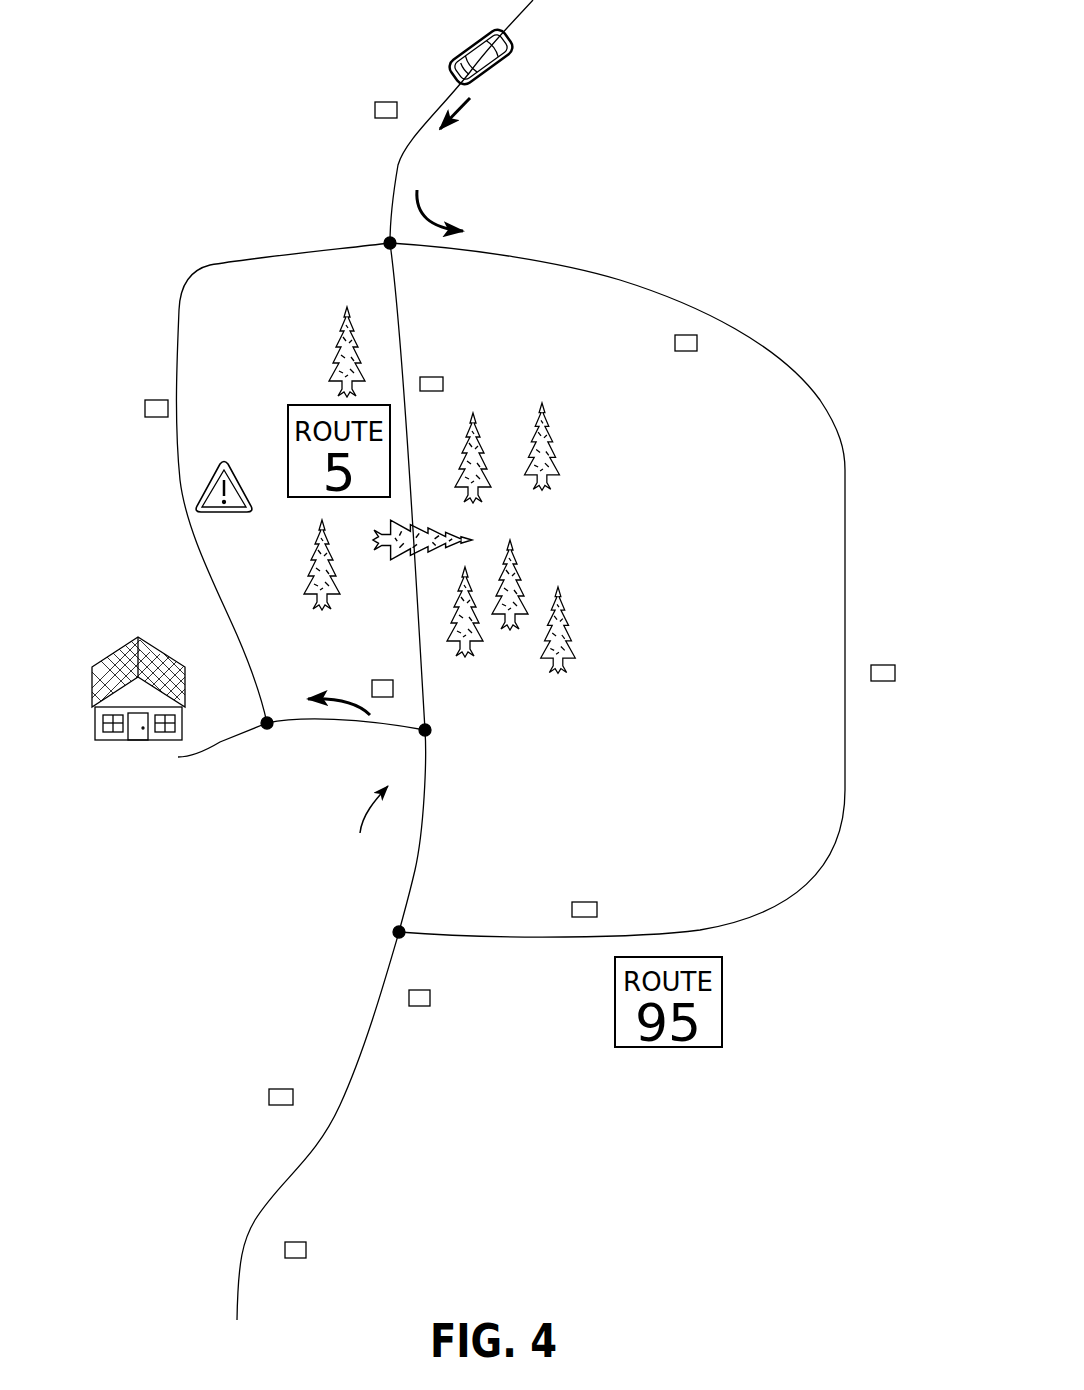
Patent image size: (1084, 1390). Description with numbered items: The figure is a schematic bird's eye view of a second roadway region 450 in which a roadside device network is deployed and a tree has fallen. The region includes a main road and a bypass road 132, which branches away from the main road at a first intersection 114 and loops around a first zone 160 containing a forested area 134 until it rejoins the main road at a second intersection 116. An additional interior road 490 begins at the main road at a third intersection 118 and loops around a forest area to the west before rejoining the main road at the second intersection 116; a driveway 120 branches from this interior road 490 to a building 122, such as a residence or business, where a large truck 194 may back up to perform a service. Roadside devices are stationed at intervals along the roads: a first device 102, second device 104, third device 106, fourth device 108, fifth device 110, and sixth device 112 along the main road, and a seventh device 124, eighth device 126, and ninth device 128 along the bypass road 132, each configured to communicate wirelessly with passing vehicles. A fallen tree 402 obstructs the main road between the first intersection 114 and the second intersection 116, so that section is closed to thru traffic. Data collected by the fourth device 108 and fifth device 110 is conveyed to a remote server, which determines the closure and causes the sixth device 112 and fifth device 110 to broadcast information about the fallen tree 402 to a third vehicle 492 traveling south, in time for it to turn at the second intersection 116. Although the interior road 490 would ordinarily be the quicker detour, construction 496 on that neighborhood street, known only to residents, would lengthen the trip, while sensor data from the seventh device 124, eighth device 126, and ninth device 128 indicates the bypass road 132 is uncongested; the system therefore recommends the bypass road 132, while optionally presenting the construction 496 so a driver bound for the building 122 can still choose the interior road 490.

The first device 102 is at (306, 1250).
The second device 104 is at (280, 1088).
The third device 106 is at (420, 1007).
The fourth device 108 is at (155, 399).
The fifth device 110 is at (444, 384).
The sixth device 112 is at (375, 110).
The first intersection 114 is at (396, 932).
The second intersection 116 is at (388, 242).
The third intersection 118 is at (430, 730).
The driveway 120 is at (228, 744).
The building 122 is at (160, 655).
The seventh device 124 is at (586, 901).
The eighth device 126 is at (883, 682).
The ninth device 128 is at (686, 352).
The bypass road 132 is at (843, 565).
The forested area 134 is at (522, 576).
The first zone 160 is at (690, 689).
The truck 194 is at (364, 825).
The fallen tree 402 is at (456, 531).
The second roadway region 450 is at (754, 108).
The interior road 490 is at (180, 296).
The third vehicle 492 is at (510, 70).
The construction 496 is at (224, 448).